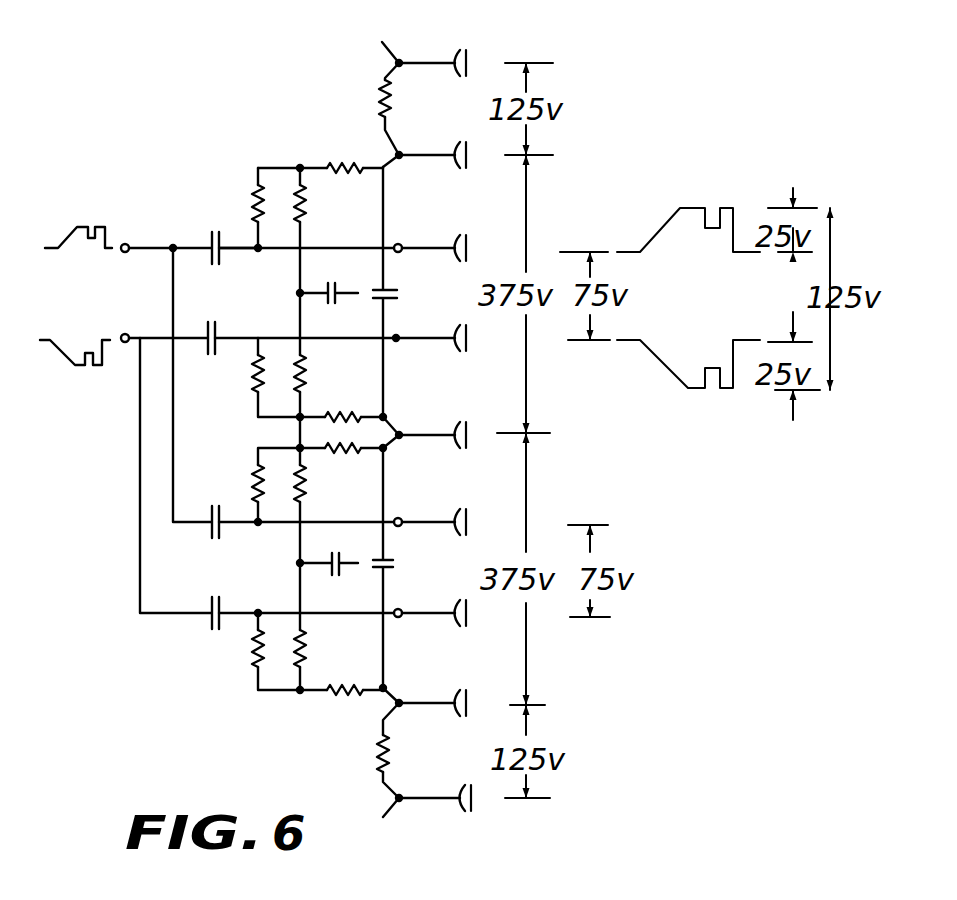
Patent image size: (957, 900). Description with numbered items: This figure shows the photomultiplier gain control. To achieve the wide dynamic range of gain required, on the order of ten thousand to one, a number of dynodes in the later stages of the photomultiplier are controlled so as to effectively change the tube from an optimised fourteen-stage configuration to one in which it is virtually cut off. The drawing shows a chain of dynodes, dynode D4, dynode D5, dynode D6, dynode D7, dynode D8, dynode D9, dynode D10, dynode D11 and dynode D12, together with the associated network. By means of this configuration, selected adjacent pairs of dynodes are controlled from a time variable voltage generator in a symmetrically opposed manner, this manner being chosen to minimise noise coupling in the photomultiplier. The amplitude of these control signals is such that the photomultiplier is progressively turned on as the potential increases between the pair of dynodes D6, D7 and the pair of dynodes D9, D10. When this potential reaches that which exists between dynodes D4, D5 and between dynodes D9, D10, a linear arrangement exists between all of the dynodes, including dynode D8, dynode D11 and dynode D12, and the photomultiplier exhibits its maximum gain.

The dynode D4 is at (433, 783).
The dynode D5 is at (431, 688).
The dynode D6 is at (342, 599).
The dynode D7 is at (342, 506).
The dynode D8 is at (431, 419).
The dynode D9 is at (340, 326).
The dynode D10 is at (342, 234).
The dynode D11 is at (431, 140).
The dynode D12 is at (431, 47).